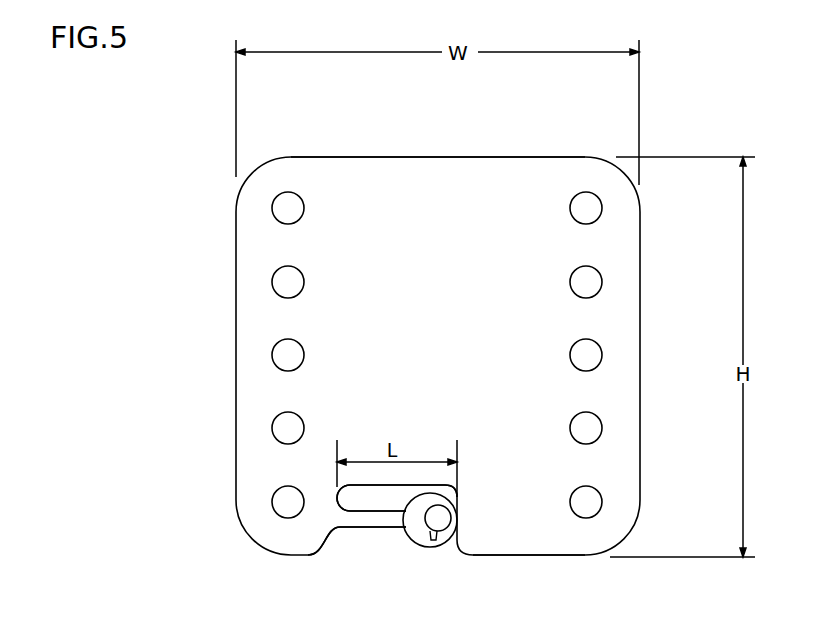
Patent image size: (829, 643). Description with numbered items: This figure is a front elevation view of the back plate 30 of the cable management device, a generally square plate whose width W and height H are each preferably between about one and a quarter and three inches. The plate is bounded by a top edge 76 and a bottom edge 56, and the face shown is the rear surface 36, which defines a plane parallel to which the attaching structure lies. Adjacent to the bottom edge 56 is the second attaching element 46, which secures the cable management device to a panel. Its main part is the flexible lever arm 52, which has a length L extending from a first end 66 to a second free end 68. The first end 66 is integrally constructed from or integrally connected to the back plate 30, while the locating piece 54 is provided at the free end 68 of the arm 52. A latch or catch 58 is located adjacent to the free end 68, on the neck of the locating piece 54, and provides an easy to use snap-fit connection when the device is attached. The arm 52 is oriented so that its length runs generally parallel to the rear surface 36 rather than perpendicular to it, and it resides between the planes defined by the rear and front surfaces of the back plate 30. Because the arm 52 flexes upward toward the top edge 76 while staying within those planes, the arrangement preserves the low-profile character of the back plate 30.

The back plate 30 is at (303, 131).
The top edge 76 is at (480, 157).
The bottom edge 56 is at (532, 555).
The rear surface 36 is at (428, 293).
The second attaching element 46 is at (398, 542).
The flexible lever arm 52 is at (393, 525).
The locating piece 54 is at (437, 550).
The second free end 68 is at (442, 518).
The catch 58 is at (430, 540).
The first end 66 is at (343, 517).